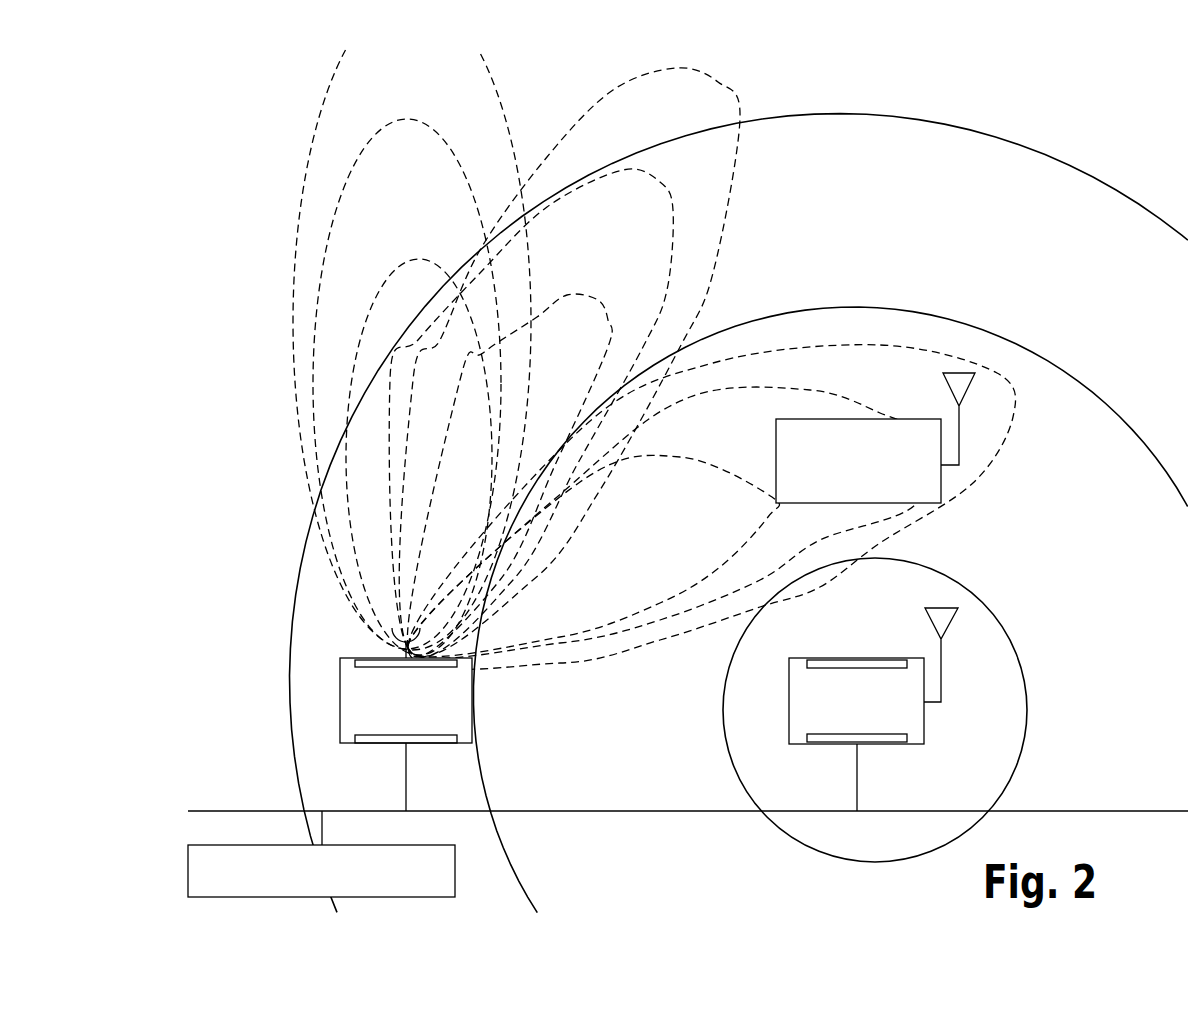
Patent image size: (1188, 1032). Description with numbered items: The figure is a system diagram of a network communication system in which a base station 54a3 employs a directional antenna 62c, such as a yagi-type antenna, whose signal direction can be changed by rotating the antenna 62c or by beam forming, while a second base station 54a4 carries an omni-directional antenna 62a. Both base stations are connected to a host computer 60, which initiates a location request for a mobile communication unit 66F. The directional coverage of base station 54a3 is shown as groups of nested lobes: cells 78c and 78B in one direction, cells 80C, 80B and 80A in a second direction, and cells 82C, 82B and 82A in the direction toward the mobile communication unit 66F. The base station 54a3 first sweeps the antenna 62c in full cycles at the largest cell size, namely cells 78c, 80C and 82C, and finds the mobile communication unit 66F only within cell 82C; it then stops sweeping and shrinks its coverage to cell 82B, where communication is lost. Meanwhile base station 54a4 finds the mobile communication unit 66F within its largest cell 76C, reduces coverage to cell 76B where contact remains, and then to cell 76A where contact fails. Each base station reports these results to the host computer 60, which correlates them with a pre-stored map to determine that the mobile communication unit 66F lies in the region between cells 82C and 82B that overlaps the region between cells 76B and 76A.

The cell 76A is at (1023, 682).
The cell 76B is at (1046, 361).
The cell 76C is at (1140, 203).
The cell 78B is at (395, 120).
The cell 78c is at (505, 110).
The cell 80A is at (587, 297).
The cell 80B is at (670, 197).
The cell 80C is at (730, 90).
The cell 82A is at (772, 515).
The cell 82B is at (833, 535).
The cell 82C is at (973, 483).
The directional antenna 62c is at (397, 637).
The omni-directional antenna 62a is at (930, 625).
The base station 54a3 is at (462, 745).
The base station 54a4 is at (924, 720).
The mobile communication unit 66F is at (835, 419).
The host computer 60 is at (188, 853).